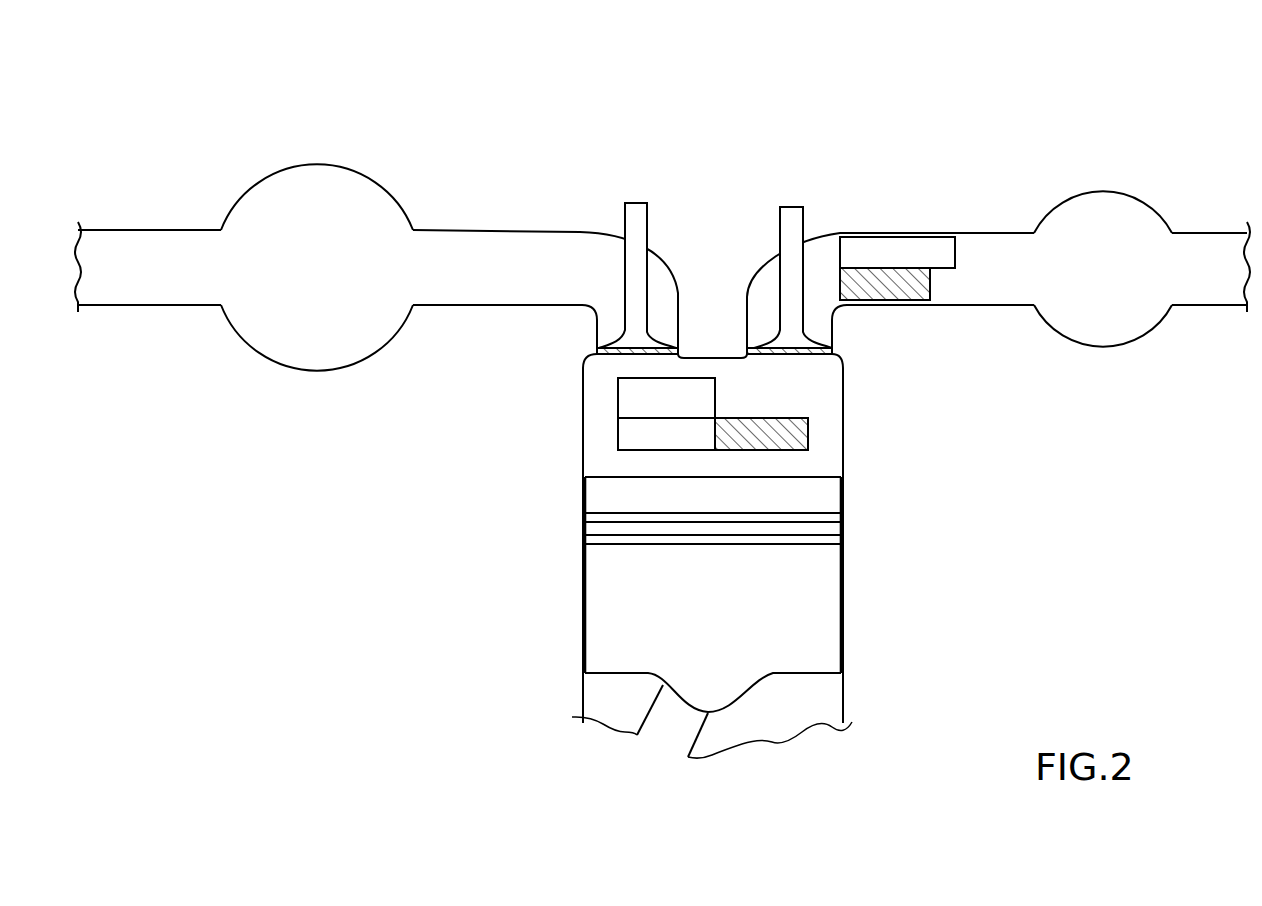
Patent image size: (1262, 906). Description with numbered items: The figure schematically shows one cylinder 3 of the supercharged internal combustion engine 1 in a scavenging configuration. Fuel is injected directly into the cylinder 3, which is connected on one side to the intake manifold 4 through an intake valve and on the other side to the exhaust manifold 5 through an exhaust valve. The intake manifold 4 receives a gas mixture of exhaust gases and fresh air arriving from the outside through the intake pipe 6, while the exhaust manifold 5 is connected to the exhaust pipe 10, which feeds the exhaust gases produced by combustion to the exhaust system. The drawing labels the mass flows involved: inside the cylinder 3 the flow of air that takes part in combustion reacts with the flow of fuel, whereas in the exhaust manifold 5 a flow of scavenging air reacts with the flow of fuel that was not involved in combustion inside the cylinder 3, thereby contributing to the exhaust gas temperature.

The internal combustion engine 1 is at (1146, 150).
The cylinder 3 is at (832, 411).
The intake manifold 4 is at (297, 347).
The exhaust manifold 5 is at (1100, 332).
The intake pipe 6 is at (558, 243).
The exhaust pipe 10 is at (977, 240).